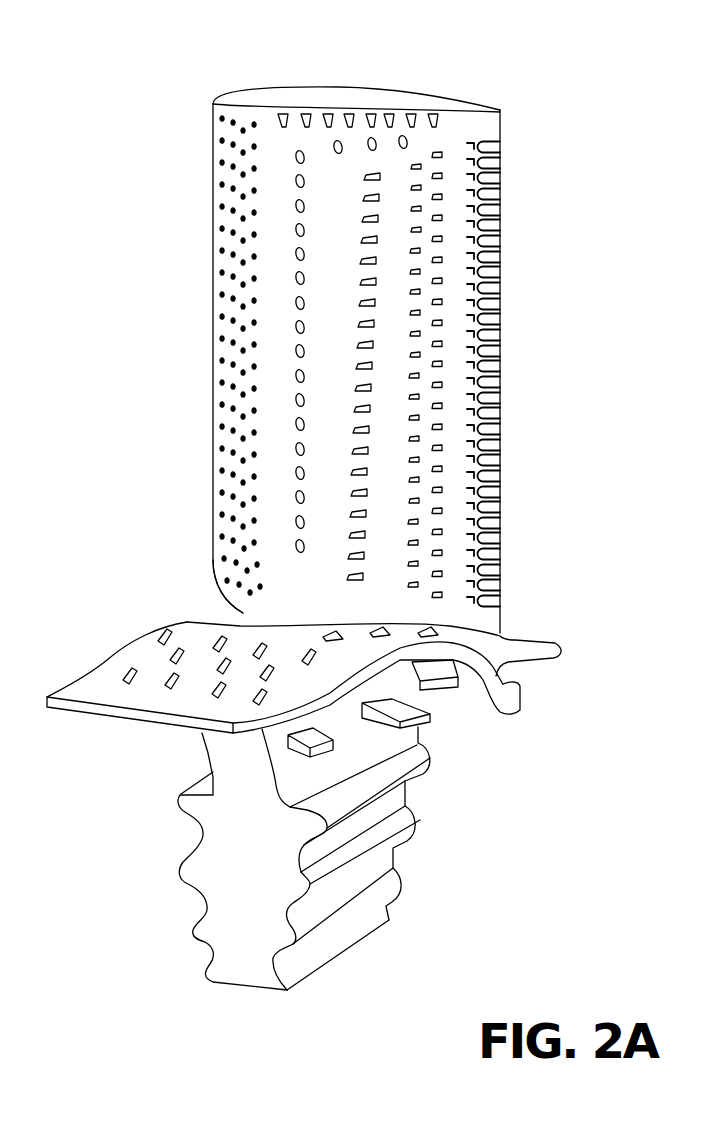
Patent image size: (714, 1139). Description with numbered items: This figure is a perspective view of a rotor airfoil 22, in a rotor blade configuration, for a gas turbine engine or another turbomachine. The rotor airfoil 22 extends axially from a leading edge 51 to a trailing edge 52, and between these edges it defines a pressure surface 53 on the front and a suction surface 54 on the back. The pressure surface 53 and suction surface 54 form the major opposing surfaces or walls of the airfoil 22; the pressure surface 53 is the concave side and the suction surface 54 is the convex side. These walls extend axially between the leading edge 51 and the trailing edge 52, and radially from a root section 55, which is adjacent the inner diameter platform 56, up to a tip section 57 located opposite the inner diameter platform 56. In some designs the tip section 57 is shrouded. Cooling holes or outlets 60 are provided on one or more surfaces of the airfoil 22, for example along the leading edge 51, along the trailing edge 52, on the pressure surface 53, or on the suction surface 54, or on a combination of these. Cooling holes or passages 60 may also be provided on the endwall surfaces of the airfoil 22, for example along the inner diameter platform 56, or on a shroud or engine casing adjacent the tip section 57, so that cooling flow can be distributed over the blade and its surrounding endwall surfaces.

The rotor airfoil 22 is at (105, 109).
The leading edge 51 is at (213, 262).
The trailing edge 52 is at (502, 377).
The pressure surface 53 is at (328, 385).
The suction surface 54 is at (442, 95).
The root section 55 is at (243, 613).
The inner diameter platform 56 is at (118, 652).
The tip section 57 is at (387, 107).
The cooling holes 60 is at (366, 217).